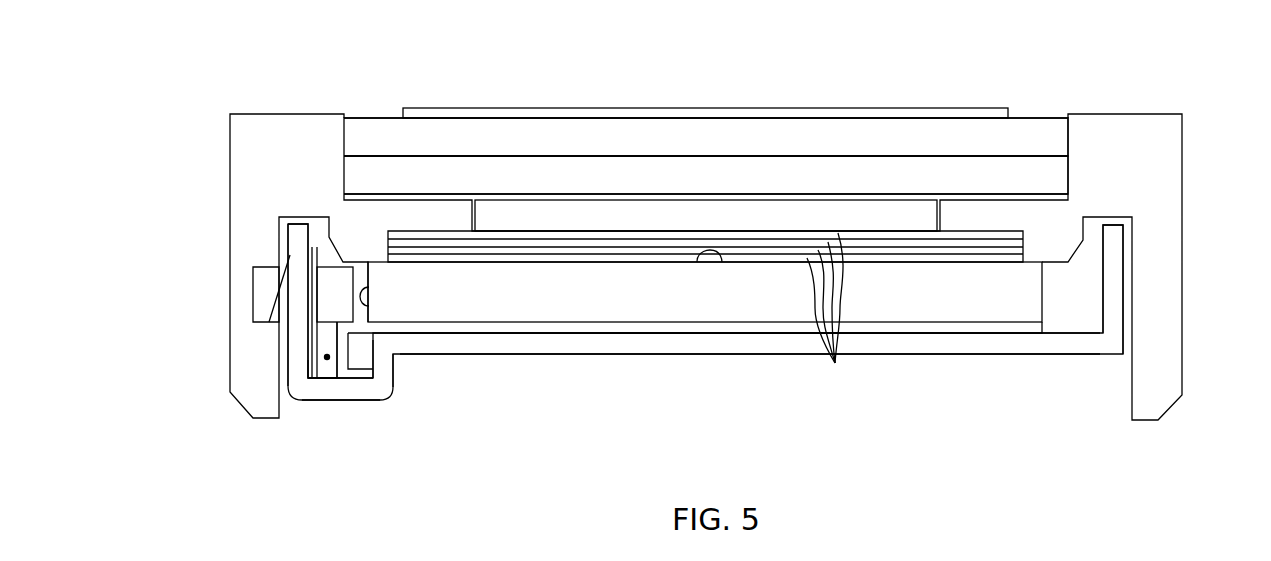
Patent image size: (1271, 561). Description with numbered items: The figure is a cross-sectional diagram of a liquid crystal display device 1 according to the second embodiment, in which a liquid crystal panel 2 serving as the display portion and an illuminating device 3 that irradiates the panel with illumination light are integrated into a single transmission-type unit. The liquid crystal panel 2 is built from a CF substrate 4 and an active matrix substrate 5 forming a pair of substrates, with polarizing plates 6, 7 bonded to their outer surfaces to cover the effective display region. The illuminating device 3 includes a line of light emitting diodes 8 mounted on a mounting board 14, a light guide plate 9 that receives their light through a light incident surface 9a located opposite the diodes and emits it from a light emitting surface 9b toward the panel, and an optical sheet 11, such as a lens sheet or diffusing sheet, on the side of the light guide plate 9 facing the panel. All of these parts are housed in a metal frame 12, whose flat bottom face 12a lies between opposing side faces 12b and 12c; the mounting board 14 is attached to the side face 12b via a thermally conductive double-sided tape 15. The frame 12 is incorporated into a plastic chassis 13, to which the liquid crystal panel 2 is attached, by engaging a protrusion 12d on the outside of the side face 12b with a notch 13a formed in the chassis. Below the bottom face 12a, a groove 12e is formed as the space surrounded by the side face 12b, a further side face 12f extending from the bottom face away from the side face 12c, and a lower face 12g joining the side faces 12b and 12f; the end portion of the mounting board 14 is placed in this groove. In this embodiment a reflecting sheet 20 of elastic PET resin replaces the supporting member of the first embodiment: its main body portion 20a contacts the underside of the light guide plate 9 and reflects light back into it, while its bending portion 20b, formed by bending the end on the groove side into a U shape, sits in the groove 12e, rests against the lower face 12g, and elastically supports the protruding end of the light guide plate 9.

The liquid crystal display device 1 is at (680, 33).
The liquid crystal panel 2 is at (706, 144).
The illuminating device 3 is at (704, 356).
The CF substrate 4 is at (1017, 138).
The active matrix substrate 5 is at (1045, 177).
The polarizing plate 6 is at (948, 115).
The polarizing plate 7 is at (882, 203).
The light emitting diodes 8 is at (330, 300).
The light guide plate 9 is at (701, 328).
The light incident surface 9a is at (372, 303).
The light emitting surface 9b is at (722, 262).
The optical sheet 11 is at (835, 363).
The frame 12 is at (704, 351).
The bottom face 12a is at (915, 346).
The side face 12b is at (298, 257).
The side face 12c is at (1112, 285).
The protrusion 12d is at (275, 305).
The groove 12e is at (327, 360).
The side face 12f is at (385, 363).
The lower face 12g is at (352, 388).
The plastic chassis 13 is at (715, 267).
The notch 13a is at (265, 280).
The mounting board 14 is at (320, 378).
The thermally conductive double-sided tape 15 is at (308, 380).
The reflecting sheet 20 is at (603, 366).
The main body portion 20a is at (752, 330).
The bending portion 20b is at (322, 357).